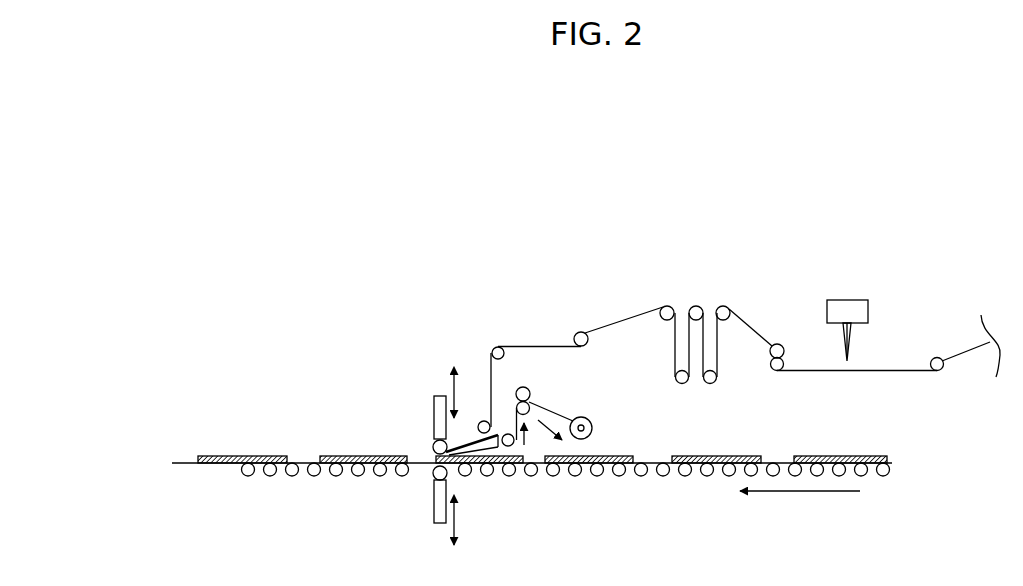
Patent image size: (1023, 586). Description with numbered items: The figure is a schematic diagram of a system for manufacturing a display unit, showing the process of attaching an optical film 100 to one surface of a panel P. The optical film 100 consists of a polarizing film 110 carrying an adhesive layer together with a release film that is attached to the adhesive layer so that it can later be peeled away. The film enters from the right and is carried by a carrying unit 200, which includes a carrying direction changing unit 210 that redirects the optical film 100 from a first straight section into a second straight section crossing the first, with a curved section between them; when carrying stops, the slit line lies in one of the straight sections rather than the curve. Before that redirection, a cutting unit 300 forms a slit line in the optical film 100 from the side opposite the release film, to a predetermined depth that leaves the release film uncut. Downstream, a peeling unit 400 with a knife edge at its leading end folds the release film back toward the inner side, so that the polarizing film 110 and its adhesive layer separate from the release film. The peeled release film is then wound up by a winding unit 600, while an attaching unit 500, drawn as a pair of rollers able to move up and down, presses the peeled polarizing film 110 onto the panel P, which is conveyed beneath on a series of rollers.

The optical film 100 is at (892, 373).
The polarizing film 110 is at (240, 455).
The carrying unit 200 is at (777, 345).
The carrying direction changing unit 210 is at (728, 306).
The cutting unit 300 is at (850, 300).
The peeling unit 400 is at (489, 450).
The attaching unit 500 is at (434, 410).
The winding unit 600 is at (585, 422).
The panel P is at (193, 457).